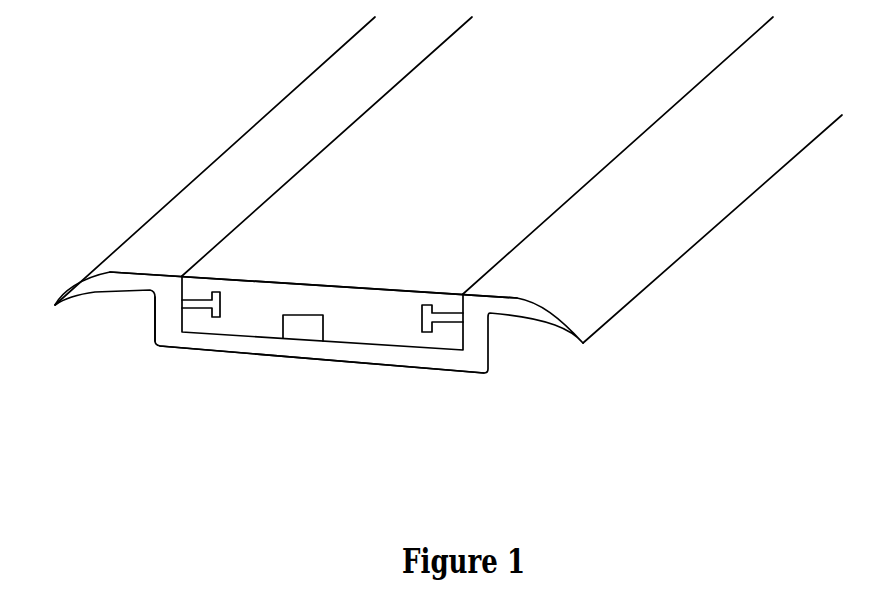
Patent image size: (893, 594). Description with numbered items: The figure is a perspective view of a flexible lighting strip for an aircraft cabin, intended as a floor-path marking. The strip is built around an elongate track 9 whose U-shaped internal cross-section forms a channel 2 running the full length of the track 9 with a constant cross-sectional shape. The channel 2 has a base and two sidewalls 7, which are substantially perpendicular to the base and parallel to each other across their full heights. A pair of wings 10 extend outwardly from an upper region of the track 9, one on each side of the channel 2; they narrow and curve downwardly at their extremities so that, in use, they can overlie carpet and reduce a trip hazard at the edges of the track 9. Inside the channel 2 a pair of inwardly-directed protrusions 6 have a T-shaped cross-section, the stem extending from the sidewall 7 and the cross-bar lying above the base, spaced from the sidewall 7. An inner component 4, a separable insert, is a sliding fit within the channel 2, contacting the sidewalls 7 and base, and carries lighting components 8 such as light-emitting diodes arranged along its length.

The channel 2 is at (355, 343).
The inner component 4 is at (333, 203).
The inwardly-directed protrusions 6 is at (443, 323).
The sidewalls 7 is at (165, 317).
The lighting components 8 is at (308, 337).
The track 9 is at (250, 347).
The wings 10 is at (198, 217).